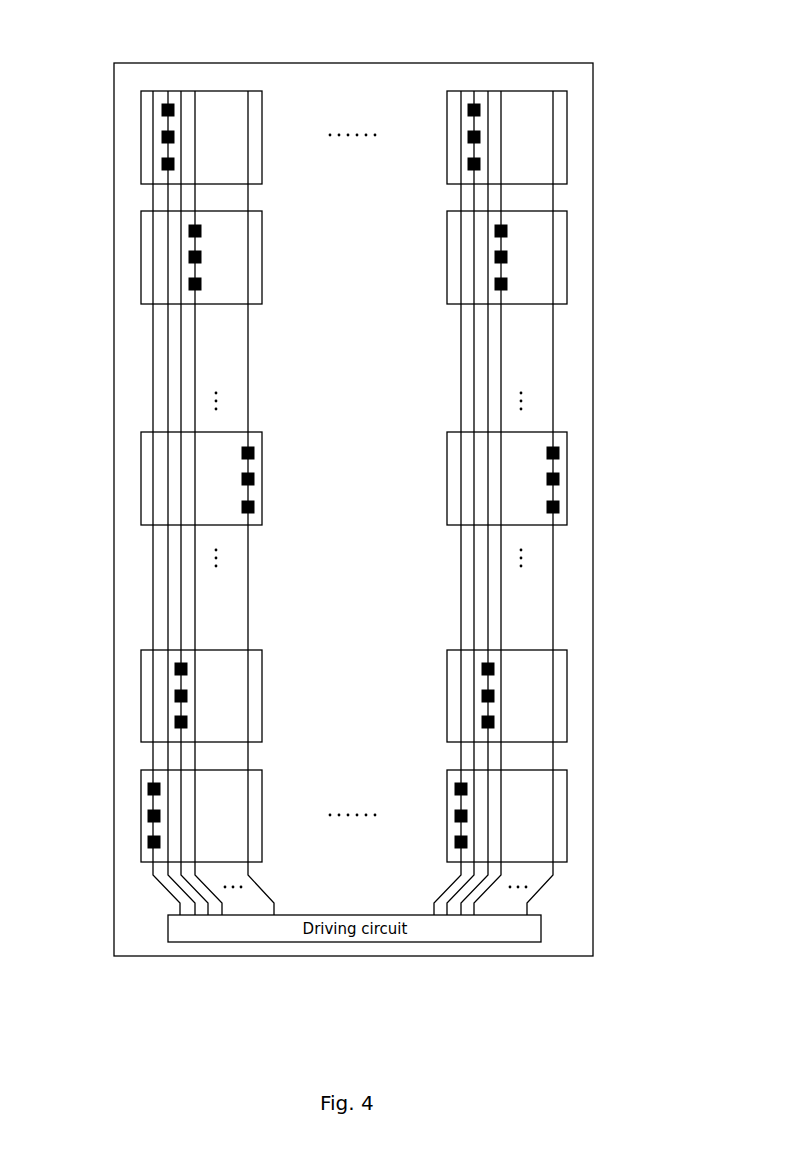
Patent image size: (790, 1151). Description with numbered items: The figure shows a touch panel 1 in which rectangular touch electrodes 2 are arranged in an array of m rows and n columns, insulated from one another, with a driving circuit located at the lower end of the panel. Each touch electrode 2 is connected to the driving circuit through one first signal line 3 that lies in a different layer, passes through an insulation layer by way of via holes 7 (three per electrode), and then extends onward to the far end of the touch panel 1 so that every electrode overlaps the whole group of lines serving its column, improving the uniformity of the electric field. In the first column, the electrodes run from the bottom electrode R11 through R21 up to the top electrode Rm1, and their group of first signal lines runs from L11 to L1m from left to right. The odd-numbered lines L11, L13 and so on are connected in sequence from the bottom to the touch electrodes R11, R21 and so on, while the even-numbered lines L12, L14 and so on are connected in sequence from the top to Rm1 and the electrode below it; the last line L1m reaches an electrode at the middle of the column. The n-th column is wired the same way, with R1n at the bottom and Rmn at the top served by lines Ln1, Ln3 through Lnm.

The touch panel 1 is at (135, 92).
The touch electrode 2 is at (162, 400).
The first signal line 3 is at (553, 580).
The via hole 7 is at (560, 450).
The touch electrode Rm1 is at (140, 140).
The touch electrode R21 is at (140, 690).
The touch electrode R11 is at (140, 812).
The touch electrode Rmn is at (514, 90).
The touch electrode R1n is at (567, 830).
The first signal line L11 is at (170, 892).
The first signal line L12 is at (168, 100).
The first signal line L13 is at (203, 915).
The first signal line L14 is at (195, 100).
The first signal line L1m is at (267, 897).
The first signal line Ln1 is at (434, 915).
The first signal line Ln3 is at (461, 915).
The first signal line Lnm is at (537, 893).